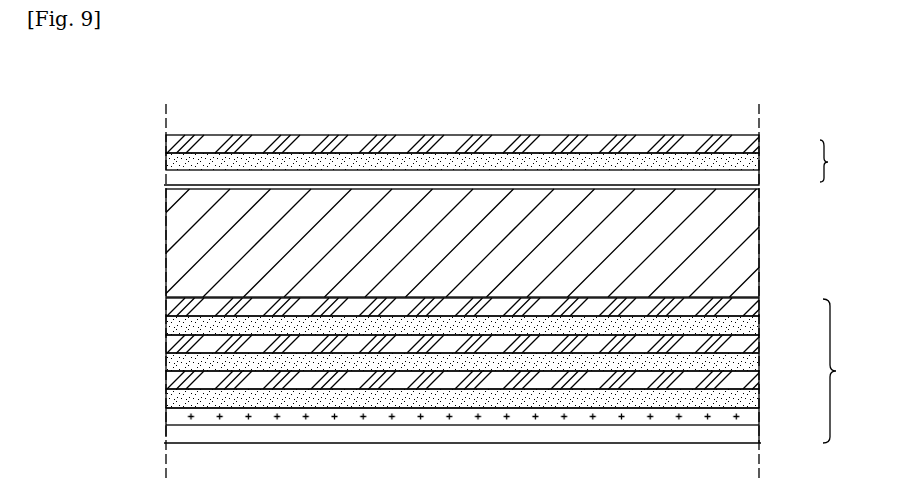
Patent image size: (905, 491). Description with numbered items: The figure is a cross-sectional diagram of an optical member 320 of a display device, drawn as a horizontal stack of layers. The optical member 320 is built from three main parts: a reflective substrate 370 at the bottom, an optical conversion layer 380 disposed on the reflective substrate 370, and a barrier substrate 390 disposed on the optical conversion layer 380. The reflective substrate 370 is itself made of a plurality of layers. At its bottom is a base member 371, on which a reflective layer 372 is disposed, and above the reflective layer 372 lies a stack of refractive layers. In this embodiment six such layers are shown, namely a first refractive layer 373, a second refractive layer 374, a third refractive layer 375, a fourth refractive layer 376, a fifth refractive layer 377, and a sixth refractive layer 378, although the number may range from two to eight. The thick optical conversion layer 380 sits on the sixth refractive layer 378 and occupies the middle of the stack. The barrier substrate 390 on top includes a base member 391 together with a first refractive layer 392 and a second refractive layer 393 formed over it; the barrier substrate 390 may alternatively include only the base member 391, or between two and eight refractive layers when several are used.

The optical member 320 is at (313, 84).
The barrier substrate 390 is at (840, 161).
The second refractive layer 393 is at (759, 144).
The first refractive layer 392 is at (759, 161).
The base member 391 is at (759, 178).
The optical conversion layer 380 is at (759, 248).
The reflective substrate 370 is at (848, 371).
The sixth refractive layer 378 is at (759, 307).
The fifth refractive layer 377 is at (759, 325).
The fourth refractive layer 376 is at (759, 344).
The third refractive layer 375 is at (759, 362).
The second refractive layer 374 is at (759, 380).
The first refractive layer 373 is at (759, 398).
The reflective layer 372 is at (759, 416).
The base member 371 is at (752, 434).